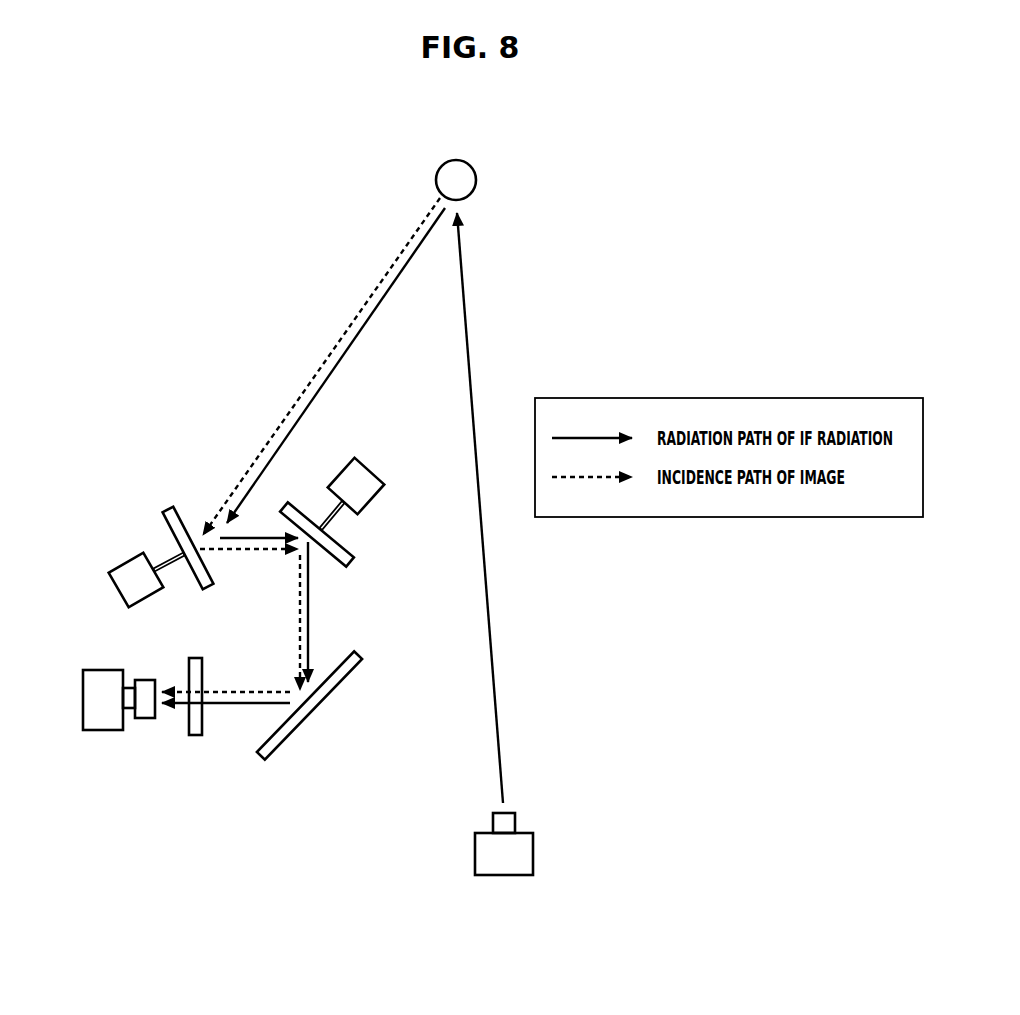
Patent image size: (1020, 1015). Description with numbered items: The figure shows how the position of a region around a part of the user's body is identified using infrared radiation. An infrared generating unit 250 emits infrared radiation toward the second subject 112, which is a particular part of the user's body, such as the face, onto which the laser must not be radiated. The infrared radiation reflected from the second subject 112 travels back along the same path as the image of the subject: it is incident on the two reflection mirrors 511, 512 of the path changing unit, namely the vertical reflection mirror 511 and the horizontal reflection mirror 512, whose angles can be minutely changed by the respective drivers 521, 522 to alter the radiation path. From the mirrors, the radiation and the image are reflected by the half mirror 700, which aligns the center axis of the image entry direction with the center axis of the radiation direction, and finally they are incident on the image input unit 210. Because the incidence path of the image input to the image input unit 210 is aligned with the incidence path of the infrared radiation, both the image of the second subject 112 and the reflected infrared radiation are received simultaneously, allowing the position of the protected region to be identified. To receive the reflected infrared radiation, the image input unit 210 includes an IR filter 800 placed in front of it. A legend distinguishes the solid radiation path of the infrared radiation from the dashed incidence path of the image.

The second subject 112 is at (451, 160).
The image input unit 210 is at (83, 689).
The infrared (IR) generating unit 250 is at (500, 877).
The vertical reflection mirror 511 is at (166, 512).
The horizontal reflection mirror 512 is at (351, 553).
The driver 521 is at (118, 557).
The driver 522 is at (377, 474).
The half mirror 700 is at (362, 650).
The IR filter 800 is at (193, 737).